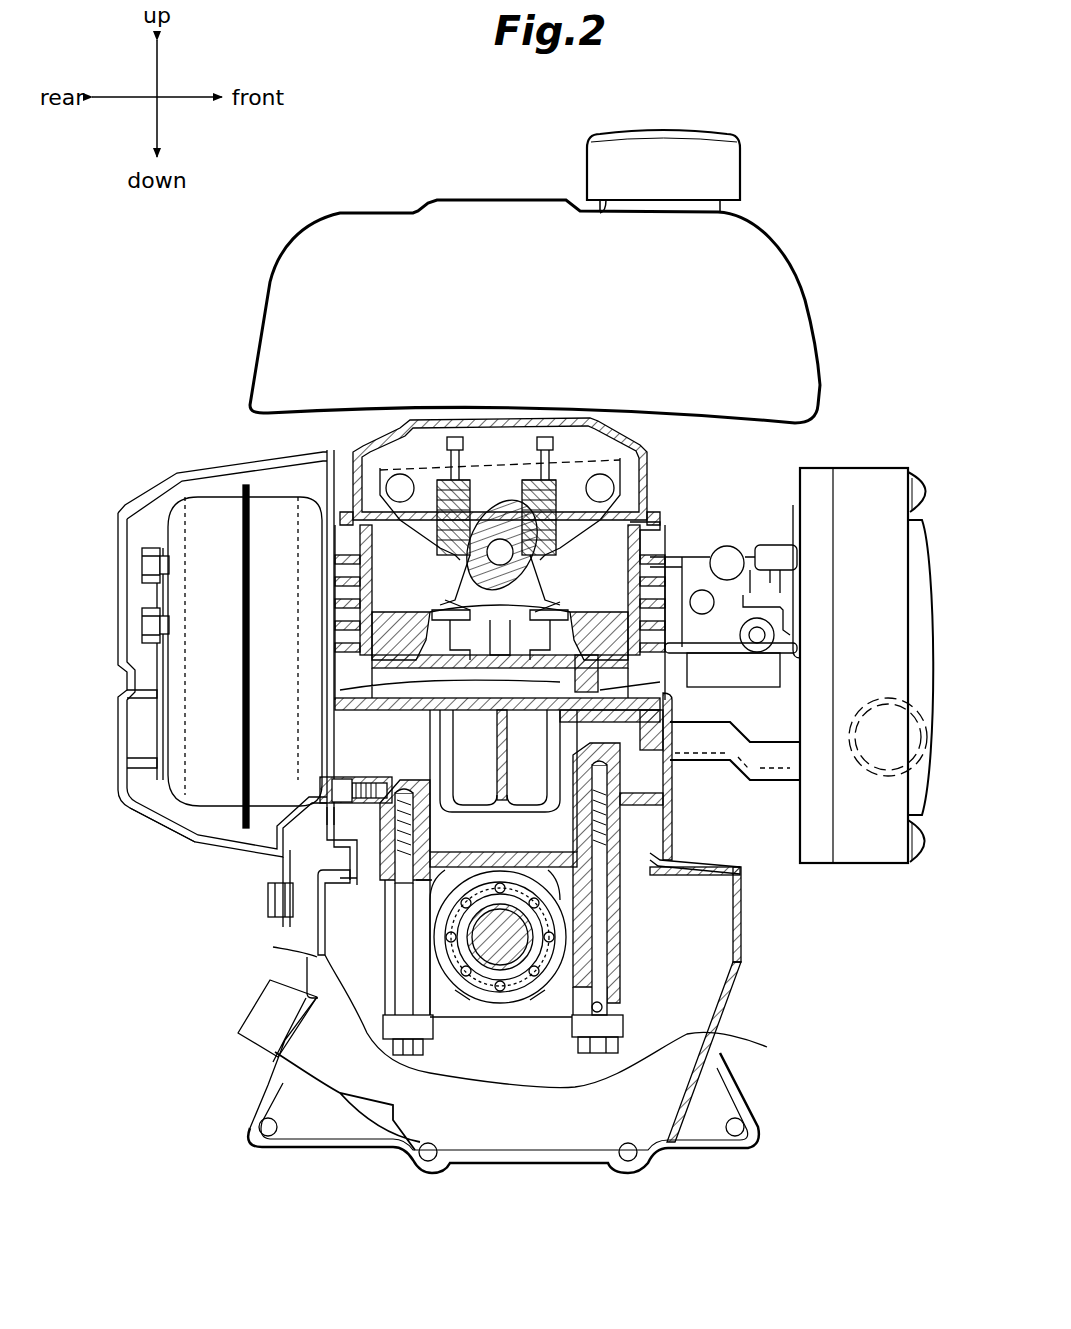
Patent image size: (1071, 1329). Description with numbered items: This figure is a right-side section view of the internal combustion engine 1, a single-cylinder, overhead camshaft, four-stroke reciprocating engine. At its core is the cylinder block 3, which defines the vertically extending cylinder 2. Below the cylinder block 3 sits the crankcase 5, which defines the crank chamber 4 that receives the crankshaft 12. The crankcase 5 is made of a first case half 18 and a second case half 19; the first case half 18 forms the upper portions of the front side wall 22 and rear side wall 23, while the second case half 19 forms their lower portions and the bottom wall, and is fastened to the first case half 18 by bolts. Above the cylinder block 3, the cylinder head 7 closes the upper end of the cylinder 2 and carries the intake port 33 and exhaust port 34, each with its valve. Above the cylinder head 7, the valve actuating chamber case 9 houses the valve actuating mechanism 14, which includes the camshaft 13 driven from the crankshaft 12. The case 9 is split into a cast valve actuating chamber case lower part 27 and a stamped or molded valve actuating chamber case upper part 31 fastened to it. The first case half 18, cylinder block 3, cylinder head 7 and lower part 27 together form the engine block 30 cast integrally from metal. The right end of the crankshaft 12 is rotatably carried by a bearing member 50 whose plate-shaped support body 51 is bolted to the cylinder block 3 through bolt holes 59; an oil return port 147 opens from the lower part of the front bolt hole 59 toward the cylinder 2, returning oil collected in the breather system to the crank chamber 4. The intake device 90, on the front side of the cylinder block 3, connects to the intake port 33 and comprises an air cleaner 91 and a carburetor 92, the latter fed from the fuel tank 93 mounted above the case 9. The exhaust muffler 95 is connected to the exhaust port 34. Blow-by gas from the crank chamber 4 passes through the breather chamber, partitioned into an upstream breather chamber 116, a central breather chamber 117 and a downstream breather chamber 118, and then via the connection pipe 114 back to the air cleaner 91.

The internal combustion engine 1 is at (301, 190).
The cylinder 2 is at (575, 672).
The cylinder block 3 is at (383, 683).
The crank chamber 4 is at (560, 899).
The crankcase 5 is at (707, 981).
The cylinder head 7 is at (372, 622).
The valve actuating chamber case 9 is at (555, 400).
The crankshaft 12 is at (497, 975).
The camshaft 13 is at (440, 535).
The valve actuating mechanism 14 is at (499, 455).
The first case half 18 is at (742, 906).
The second case half 19 is at (567, 1138).
The front side wall 22 is at (748, 967).
The rear side wall 23 is at (317, 936).
The valve actuating chamber case lower part 27 is at (648, 522).
The engine block 30 is at (748, 884).
The valve actuating chamber case upper part 31 is at (644, 462).
The intake port 33 is at (560, 602).
The exhaust port 34 is at (445, 600).
The bearing member 50 is at (376, 995).
The support body 51 is at (448, 1020).
The bolt hole 59 is at (388, 882).
The intake device 90 is at (830, 464).
The air cleaner 91 is at (870, 468).
The carburetor 92 is at (706, 565).
The fuel tank 93 is at (777, 272).
The exhaust muffler 95 is at (193, 798).
The connection pipe 114 is at (698, 722).
The upstream breather chamber 116 is at (353, 727).
The central breather chamber 117 is at (497, 775).
The downstream breather chamber 118 is at (655, 787).
The oil return port 147 is at (604, 1007).